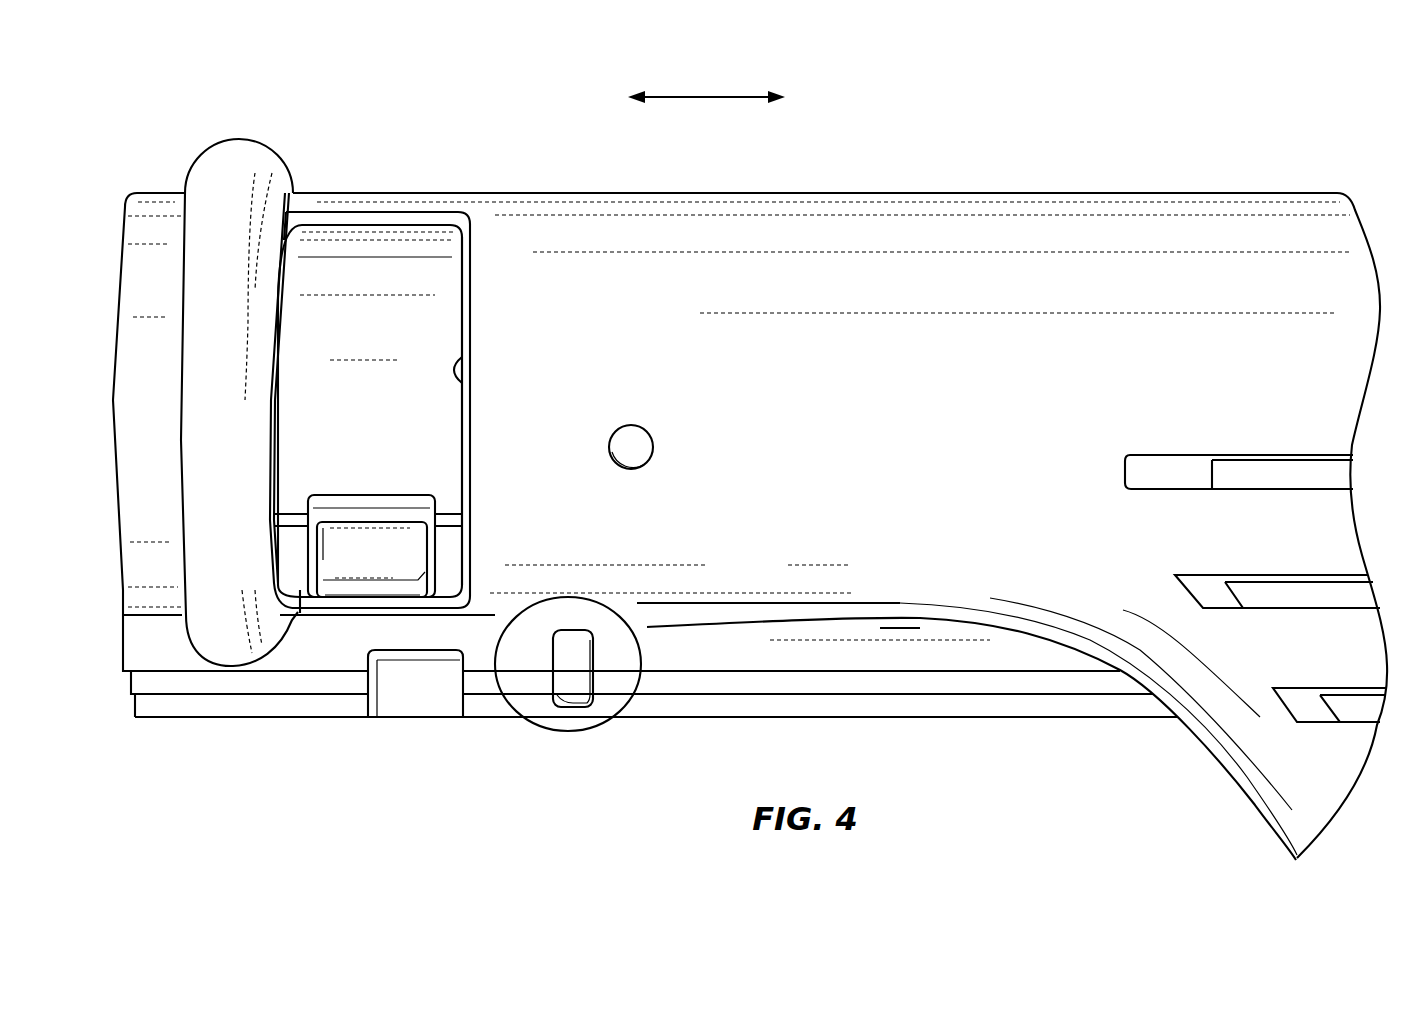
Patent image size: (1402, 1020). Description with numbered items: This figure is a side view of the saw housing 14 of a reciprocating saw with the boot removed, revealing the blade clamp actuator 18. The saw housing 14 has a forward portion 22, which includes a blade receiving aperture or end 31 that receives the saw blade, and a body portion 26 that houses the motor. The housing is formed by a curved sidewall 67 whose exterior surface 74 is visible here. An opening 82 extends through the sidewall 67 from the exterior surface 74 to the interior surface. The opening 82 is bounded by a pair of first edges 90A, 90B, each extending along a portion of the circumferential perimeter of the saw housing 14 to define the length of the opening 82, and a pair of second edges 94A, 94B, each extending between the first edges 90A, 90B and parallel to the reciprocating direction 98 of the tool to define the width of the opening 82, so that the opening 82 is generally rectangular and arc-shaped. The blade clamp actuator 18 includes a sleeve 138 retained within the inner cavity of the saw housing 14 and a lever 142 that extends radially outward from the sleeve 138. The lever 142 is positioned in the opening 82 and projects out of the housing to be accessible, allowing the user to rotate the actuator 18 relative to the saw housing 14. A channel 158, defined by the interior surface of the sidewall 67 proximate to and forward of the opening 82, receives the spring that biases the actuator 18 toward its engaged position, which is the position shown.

The saw housing 14 is at (838, 188).
The blade clamp actuator 18 is at (437, 467).
The forward portion 22 is at (150, 190).
The body portion 26 is at (1228, 190).
The blade receiving aperture or end 31 is at (100, 392).
The curved sidewall 67 is at (1012, 232).
The exterior surface 74 is at (876, 425).
The opening 82 is at (298, 336).
The first edge 90A is at (465, 366).
The first edge 90B is at (317, 248).
The second edge 94A is at (412, 218).
The second edge 94B is at (302, 610).
The reciprocating direction 98 is at (713, 95).
The sleeve 138 is at (430, 268).
The lever 142 is at (368, 592).
The channel 158 is at (230, 183).